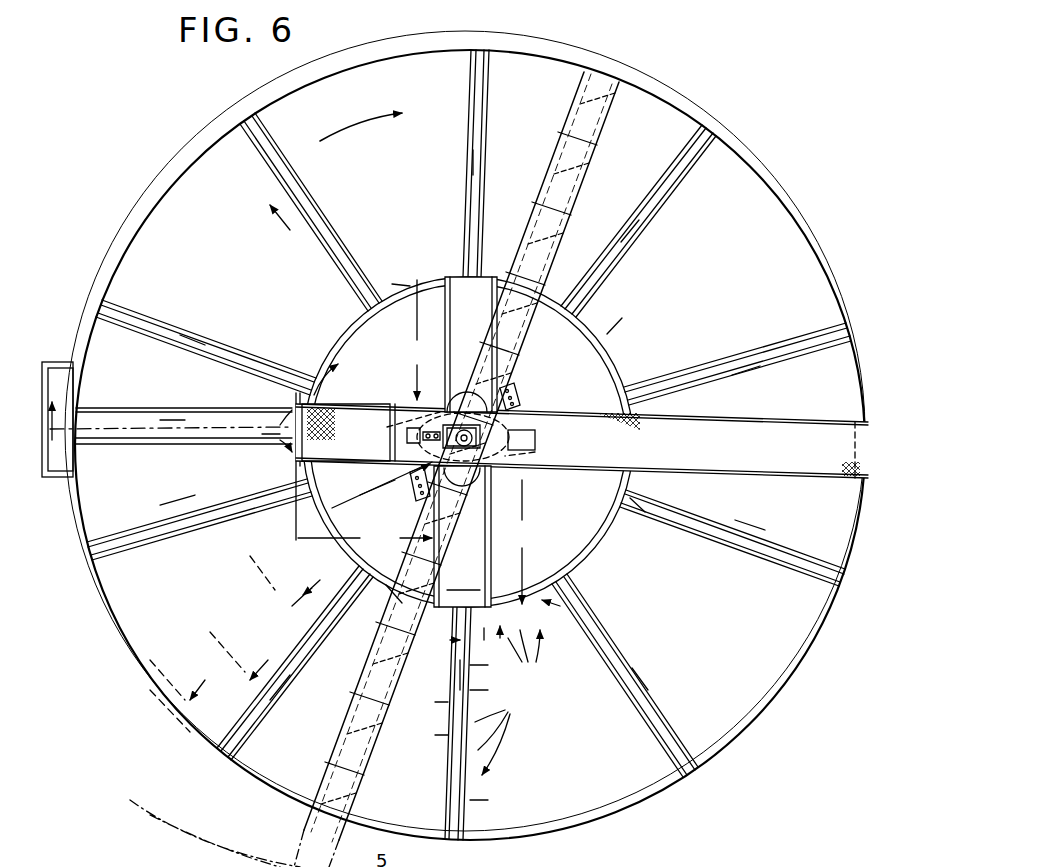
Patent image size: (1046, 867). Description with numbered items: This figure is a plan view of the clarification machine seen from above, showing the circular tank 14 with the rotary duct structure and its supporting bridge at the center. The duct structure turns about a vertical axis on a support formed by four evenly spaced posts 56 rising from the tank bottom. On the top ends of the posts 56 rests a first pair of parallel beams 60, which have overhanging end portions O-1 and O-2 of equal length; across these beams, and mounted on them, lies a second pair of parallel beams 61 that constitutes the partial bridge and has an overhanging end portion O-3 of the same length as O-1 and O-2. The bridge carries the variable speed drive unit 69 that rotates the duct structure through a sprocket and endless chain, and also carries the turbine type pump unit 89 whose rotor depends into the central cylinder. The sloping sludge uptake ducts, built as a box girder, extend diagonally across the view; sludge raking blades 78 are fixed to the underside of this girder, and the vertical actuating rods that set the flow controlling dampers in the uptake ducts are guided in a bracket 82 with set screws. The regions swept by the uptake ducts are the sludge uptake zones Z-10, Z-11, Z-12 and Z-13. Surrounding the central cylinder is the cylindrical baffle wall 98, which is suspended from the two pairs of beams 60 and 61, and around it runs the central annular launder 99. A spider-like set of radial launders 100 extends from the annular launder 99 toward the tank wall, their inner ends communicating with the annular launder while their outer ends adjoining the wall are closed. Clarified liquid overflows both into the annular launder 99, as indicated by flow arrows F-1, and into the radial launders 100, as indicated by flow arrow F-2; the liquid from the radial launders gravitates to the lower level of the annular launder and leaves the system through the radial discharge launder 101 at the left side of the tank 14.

The rotary drying apparatus housing 14 is at (453, 435).
The posts 56 is at (538, 451).
The first pair of parallel beams 60 is at (494, 325).
The second pair of parallel beams 61 is at (575, 472).
The variable speed drive unit 69 is at (522, 440).
The sludge raking blades 78 is at (320, 763).
The bracket 82 is at (410, 480).
The turbine type pump unit 89 is at (415, 436).
The cylindrical baffle wall 98 is at (364, 311).
The central annular launder 99 is at (338, 310).
The radial launders 100 is at (305, 182).
The radial discharge launder 101 is at (190, 410).
The overhanging end portion O-1 is at (410, 340).
The overhanging end portion O-2 is at (519, 542).
The overhanging end portion O-3 is at (365, 541).
The sludge uptake zone Z-10 is at (193, 696).
The sludge uptake zone Z-11 is at (250, 656).
The sludge uptake zone Z-12 is at (287, 581).
The sludge uptake zone Z-13 is at (382, 496).
The flow arrows F-1 is at (512, 656).
The flow arrow F-2 is at (480, 720).